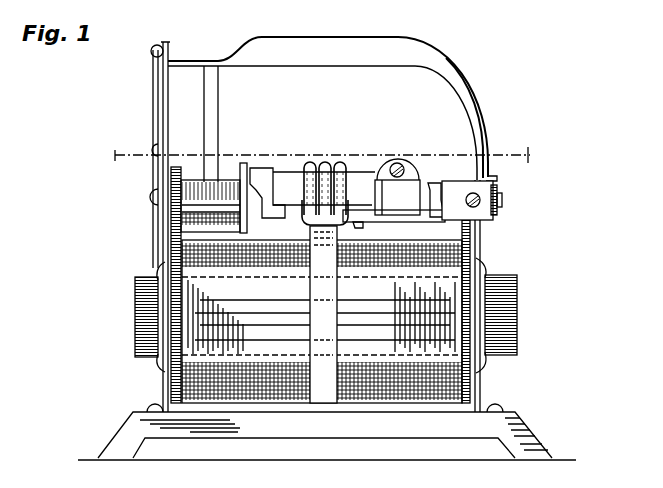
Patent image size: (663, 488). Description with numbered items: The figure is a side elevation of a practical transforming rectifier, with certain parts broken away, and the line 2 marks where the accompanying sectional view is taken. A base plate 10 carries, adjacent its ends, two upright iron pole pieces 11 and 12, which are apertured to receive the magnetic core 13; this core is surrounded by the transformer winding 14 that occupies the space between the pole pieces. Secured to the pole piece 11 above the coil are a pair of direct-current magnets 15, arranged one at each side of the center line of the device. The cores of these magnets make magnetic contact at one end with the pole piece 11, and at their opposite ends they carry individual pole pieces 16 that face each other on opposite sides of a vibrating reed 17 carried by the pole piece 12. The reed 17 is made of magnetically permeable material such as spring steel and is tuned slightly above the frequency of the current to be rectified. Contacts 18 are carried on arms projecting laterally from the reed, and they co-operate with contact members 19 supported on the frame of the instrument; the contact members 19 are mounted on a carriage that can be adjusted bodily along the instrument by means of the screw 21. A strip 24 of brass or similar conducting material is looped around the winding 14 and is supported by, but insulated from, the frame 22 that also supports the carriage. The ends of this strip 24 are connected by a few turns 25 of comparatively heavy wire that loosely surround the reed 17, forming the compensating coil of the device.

The section line 2— 2 is at (318, 156).
The base plate 10 is at (327, 436).
The pole piece 11 is at (163, 246).
The pole piece 12 is at (482, 245).
The magnetic core 13 is at (135, 316).
The transformer winding 14 is at (320, 285).
The direct-current magnets 15 is at (191, 180).
The individual pole pieces 16 is at (251, 187).
The vibrating reed 17 is at (357, 181).
The contacts 18 is at (437, 178).
The contact members 19 is at (421, 176).
The screw 21 is at (498, 207).
The frame 22 is at (440, 217).
The strip 24 is at (323, 314).
The turns 25 is at (325, 162).